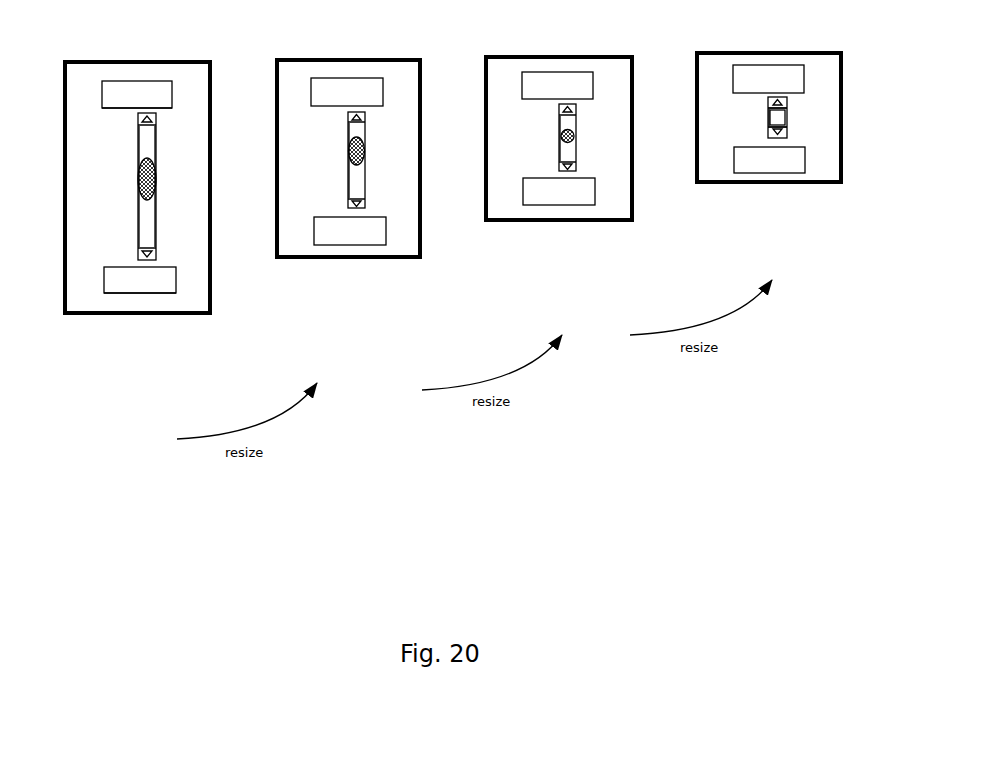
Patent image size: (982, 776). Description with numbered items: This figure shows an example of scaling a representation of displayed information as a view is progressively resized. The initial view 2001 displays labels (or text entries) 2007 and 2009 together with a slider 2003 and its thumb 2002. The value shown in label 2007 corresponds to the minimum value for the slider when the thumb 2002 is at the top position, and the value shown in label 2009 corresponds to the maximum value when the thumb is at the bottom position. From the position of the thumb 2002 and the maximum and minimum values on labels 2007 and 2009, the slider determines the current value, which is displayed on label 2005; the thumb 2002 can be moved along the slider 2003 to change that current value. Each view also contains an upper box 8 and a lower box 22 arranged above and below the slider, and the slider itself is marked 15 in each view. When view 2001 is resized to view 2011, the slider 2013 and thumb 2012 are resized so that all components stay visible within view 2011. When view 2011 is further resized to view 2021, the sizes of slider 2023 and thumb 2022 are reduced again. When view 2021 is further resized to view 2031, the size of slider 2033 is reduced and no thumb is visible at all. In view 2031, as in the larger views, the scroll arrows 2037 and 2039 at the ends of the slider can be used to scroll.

The display region 8 is at (453, 86).
The scroll bar 15 is at (450, 178).
The control region 22 is at (454, 220).
The view 2001 is at (155, 62).
The thumb 2002 is at (154, 189).
The slider 2003 is at (137, 207).
The label 2005 is at (115, 180).
The label 2007 is at (118, 108).
The label 2009 is at (140, 293).
The view 2011 is at (350, 60).
The thumb 2012 is at (365, 155).
The slider 2013 is at (348, 178).
The view 2021 is at (583, 57).
The thumb 2022 is at (572, 142).
The slider 2023 is at (564, 142).
The view 2031 is at (778, 53).
The slider 2033 is at (777, 115).
The scroll arrow 2037 is at (787, 99).
The scroll arrow 2039 is at (777, 133).